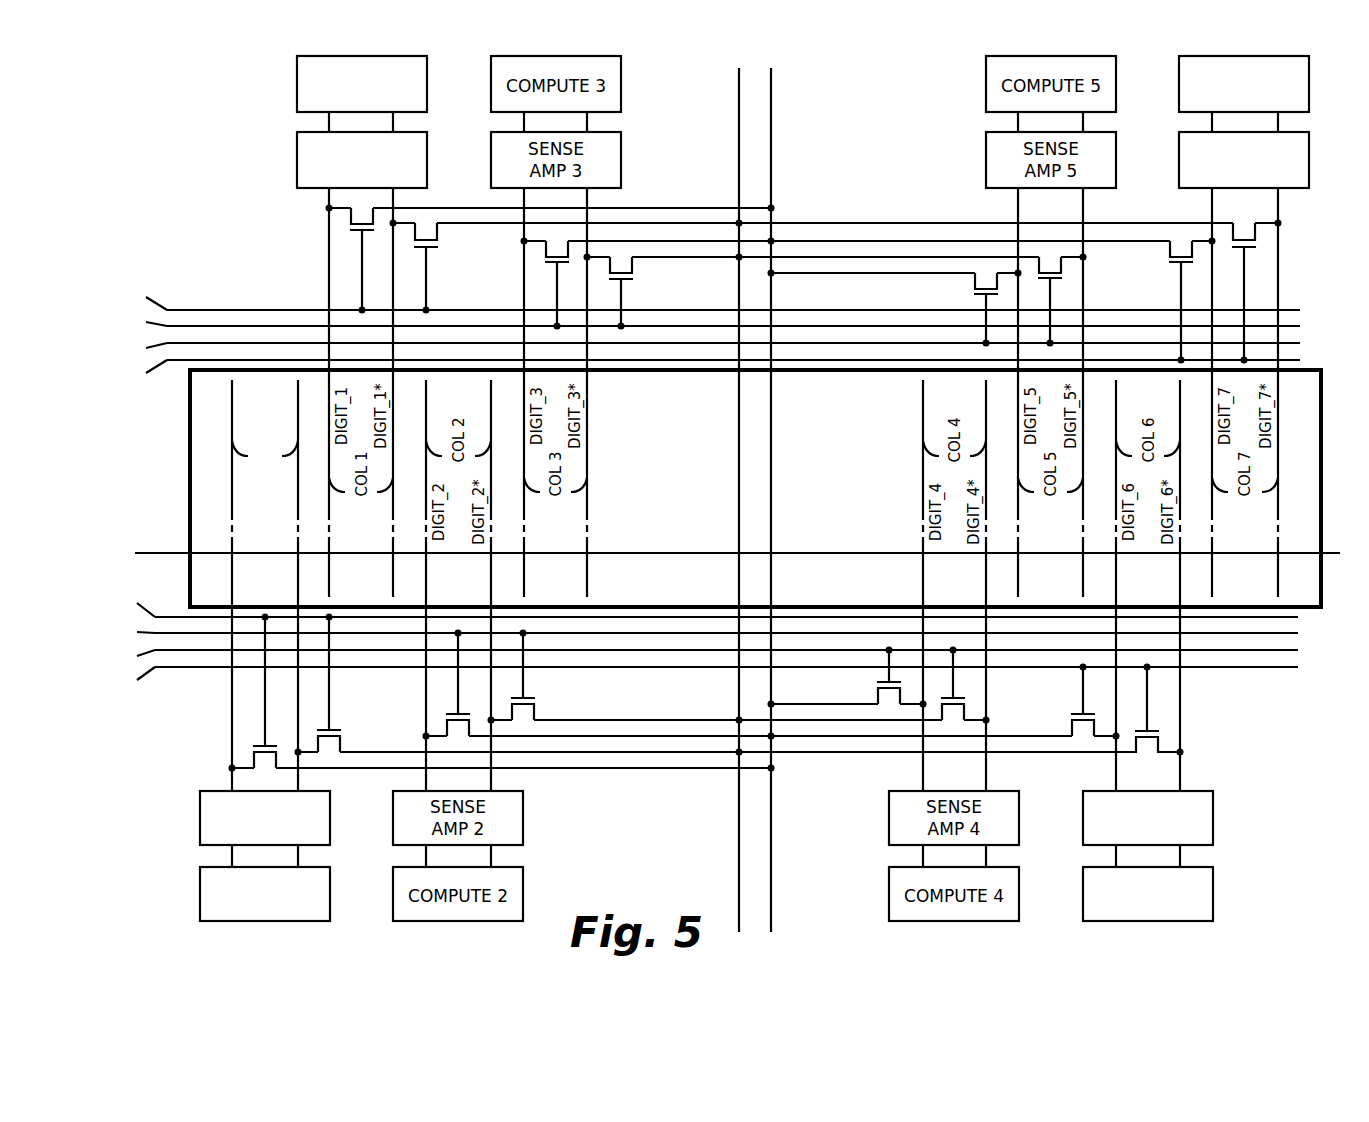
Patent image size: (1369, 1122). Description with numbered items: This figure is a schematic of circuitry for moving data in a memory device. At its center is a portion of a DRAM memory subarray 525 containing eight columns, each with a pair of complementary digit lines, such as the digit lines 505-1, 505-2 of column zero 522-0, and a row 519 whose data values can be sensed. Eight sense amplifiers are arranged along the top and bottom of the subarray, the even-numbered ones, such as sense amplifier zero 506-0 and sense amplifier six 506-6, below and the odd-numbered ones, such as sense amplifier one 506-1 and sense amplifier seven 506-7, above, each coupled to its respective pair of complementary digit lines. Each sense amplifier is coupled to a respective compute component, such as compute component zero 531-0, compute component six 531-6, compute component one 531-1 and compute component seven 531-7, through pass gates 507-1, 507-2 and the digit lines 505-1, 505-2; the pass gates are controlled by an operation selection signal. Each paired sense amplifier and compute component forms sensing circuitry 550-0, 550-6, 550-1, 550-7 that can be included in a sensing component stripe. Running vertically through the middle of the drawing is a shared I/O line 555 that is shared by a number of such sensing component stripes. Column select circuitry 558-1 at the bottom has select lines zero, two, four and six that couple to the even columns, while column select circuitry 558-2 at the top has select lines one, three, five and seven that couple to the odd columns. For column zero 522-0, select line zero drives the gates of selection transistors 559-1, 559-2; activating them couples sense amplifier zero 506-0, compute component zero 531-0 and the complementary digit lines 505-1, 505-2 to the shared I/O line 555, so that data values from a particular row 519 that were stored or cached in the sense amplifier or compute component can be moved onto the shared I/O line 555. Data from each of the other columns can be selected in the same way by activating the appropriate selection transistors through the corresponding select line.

The DRAM memory subarray 525 is at (755, 488).
The row 519 is at (170, 553).
The shared I/O line 555 is at (771, 86).
The column select circuitry 558-1 is at (123, 740).
The column select circuitry 558-2 is at (135, 240).
The selection transistor 559-1 is at (254, 752).
The selection transistor 559-2 is at (340, 742).
The digit line 505-1 is at (232, 592).
The digit line 505-2 is at (298, 590).
The column 0 522-0 is at (245, 445).
The pass gate 507-1 is at (232, 857).
The pass gate 507-2 is at (298, 856).
The sense amplifier 0 506-0 is at (1217, 785).
The sense amplifier 6 506-6 is at (1191, 818).
The sense amplifier 1 506-1 is at (321, 161).
The sense amplifier 7 506-7 is at (767, 160).
The compute component 0 531-0 is at (1217, 860).
The compute component 6 531-6 is at (1191, 894).
The compute component 1 531-1 is at (293, 114).
The compute component 7 531-7 is at (767, 84).
The sensing circuitry 550-0 is at (754, 855).
The sensing circuitry 550-6 is at (1226, 856).
The sensing circuitry 550-1 is at (285, 122).
The sensing circuitry 550-7 is at (729, 122).